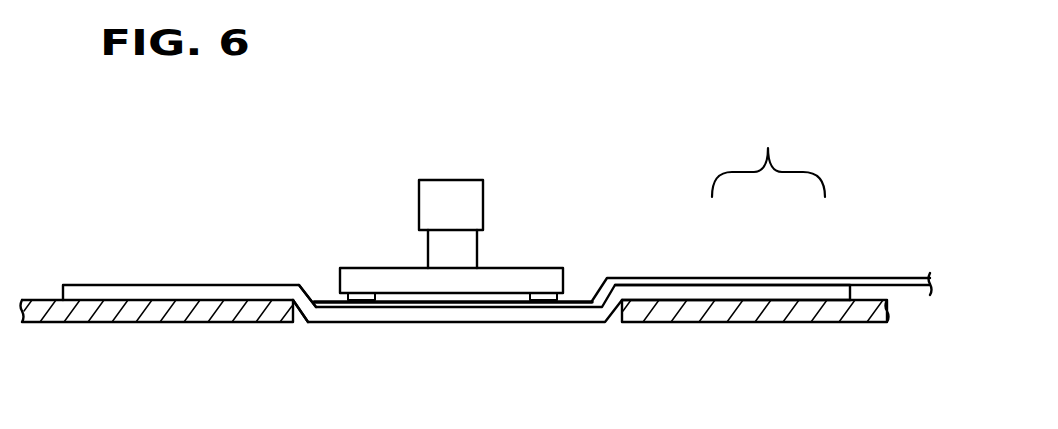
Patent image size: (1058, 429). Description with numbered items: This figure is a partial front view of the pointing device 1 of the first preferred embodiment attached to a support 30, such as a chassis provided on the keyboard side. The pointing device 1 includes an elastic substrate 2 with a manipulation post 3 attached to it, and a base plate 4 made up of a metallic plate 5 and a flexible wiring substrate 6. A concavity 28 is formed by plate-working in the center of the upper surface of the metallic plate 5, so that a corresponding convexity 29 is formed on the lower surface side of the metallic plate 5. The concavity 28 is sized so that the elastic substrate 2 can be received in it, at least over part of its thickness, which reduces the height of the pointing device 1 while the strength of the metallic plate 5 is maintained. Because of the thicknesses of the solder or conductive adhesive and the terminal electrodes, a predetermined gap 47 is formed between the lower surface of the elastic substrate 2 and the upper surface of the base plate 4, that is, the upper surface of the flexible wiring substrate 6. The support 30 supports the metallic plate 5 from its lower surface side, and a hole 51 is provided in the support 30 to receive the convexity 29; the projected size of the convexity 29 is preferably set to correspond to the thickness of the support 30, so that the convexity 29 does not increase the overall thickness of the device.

The pointing device 1 is at (282, 178).
The elastic substrate 2 is at (529, 269).
The manipulation post 3 is at (477, 200).
The base plate 4 is at (768, 148).
The metallic plate 5 is at (712, 290).
The flexible wiring substrate 6 is at (800, 278).
The concavity 28 is at (394, 297).
The convexity 29 is at (418, 323).
The support 30 is at (780, 323).
The gap 47 is at (466, 296).
The hole 51 is at (297, 318).